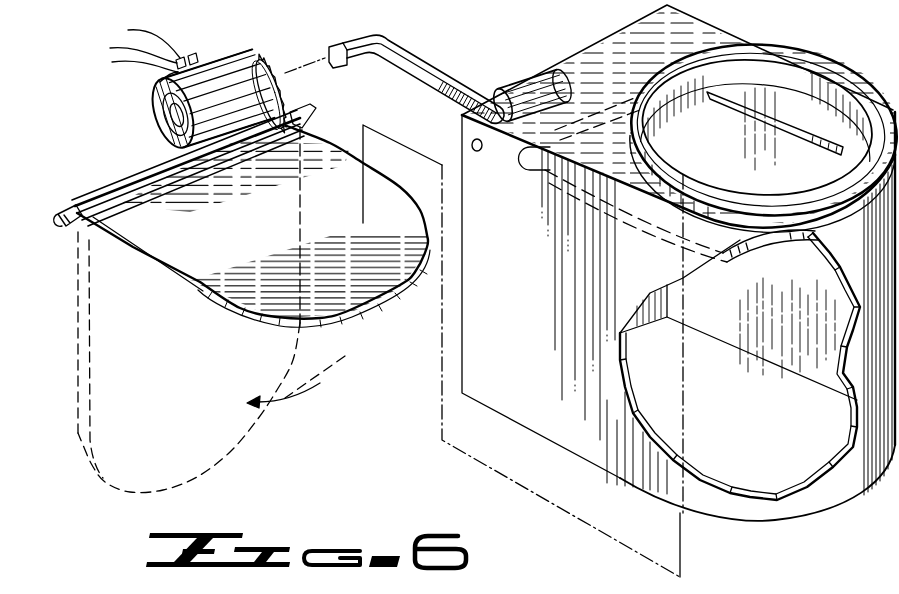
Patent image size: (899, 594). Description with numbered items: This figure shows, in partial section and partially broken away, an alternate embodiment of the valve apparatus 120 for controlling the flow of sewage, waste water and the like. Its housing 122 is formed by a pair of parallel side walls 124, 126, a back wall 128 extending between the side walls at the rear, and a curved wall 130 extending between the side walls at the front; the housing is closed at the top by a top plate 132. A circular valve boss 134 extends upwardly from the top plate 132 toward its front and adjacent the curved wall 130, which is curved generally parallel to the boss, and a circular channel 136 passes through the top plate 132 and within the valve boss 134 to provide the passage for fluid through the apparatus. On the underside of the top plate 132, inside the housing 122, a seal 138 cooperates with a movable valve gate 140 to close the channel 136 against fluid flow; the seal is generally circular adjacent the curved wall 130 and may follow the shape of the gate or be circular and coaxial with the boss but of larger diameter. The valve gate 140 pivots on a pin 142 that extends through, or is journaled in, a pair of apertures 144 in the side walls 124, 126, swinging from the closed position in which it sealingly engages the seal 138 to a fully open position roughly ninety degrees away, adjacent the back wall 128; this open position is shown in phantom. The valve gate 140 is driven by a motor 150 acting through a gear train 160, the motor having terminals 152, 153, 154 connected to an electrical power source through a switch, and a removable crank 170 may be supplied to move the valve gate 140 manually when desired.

The valve apparatus 120 is at (428, 388).
The housing 122 is at (547, 433).
The side wall 124 is at (636, 412).
The side wall 126 is at (800, 363).
The back wall 128 is at (640, 320).
The curved wall 130 is at (833, 490).
The top plate 132 is at (707, 32).
The valve boss 134 is at (823, 67).
The channel 136 is at (660, 98).
The seal 138 is at (783, 257).
The valve gate 140 is at (382, 282).
The pin 142 is at (60, 212).
The aperture 144 is at (470, 143).
The motor 150 is at (250, 58).
The terminal 152 is at (196, 62).
The terminal 153 is at (193, 53).
The terminal 154 is at (165, 82).
The gear train 160 is at (283, 64).
The removable crank 170 is at (423, 67).